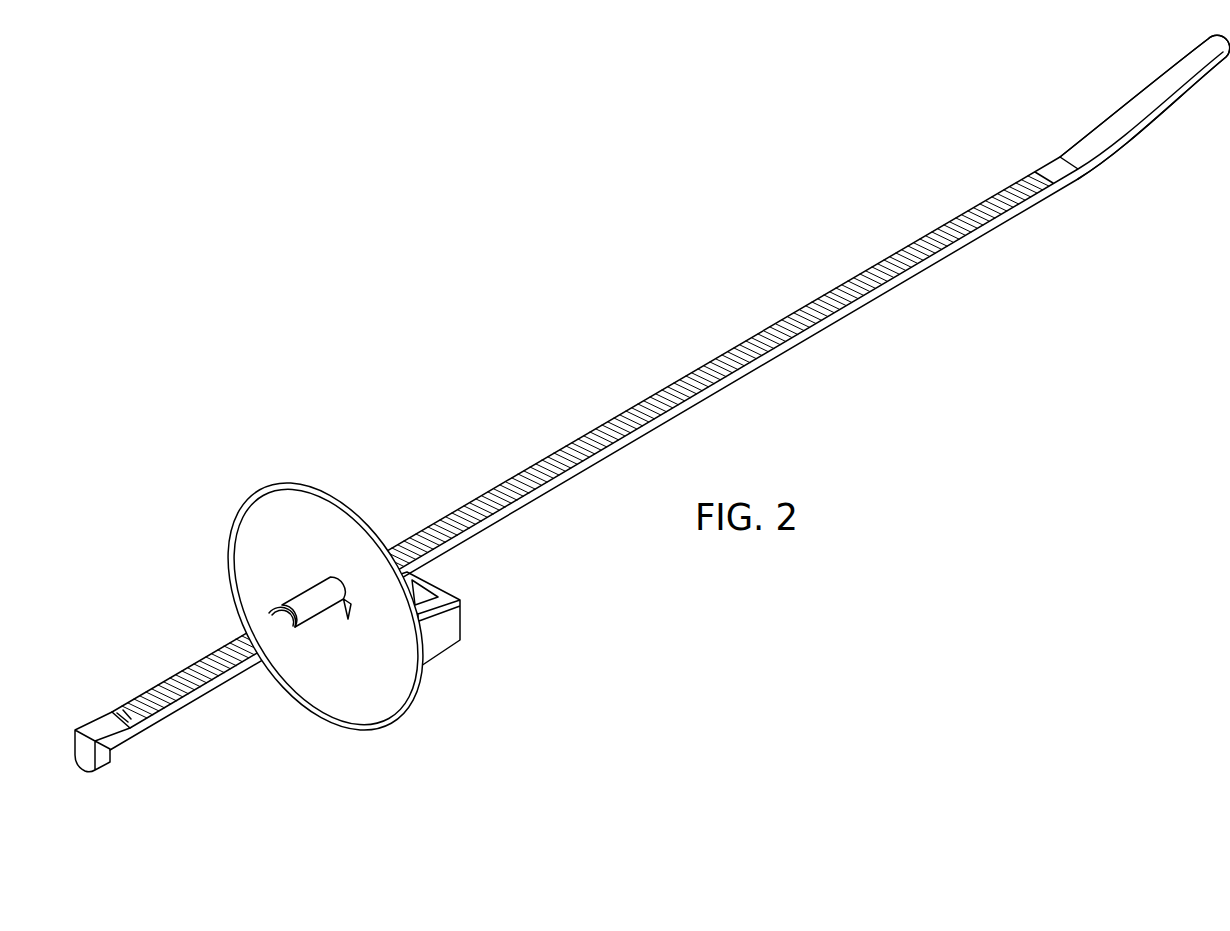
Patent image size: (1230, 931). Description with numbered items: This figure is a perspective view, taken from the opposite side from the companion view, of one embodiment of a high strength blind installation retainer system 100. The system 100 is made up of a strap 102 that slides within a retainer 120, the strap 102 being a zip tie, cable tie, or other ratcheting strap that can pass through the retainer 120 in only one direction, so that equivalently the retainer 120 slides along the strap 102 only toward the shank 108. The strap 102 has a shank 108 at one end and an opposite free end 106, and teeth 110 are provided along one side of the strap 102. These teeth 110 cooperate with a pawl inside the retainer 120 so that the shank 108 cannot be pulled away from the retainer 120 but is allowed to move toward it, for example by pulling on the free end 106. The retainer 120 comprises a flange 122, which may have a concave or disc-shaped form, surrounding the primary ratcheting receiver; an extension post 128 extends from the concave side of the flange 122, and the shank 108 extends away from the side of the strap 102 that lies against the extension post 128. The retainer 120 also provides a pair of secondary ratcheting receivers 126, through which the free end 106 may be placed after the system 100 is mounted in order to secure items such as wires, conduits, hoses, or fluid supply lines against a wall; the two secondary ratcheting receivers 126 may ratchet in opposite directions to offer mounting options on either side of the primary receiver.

The high strength blind installation retainer system 100 is at (461, 321).
The strap 102 is at (826, 339).
The free end 106 is at (1133, 108).
The shank 108 is at (96, 774).
The teeth 110 is at (625, 408).
The retainer 120 is at (332, 489).
The flange 122 is at (264, 491).
The secondary ratcheting receivers 126 is at (461, 618).
The extension post 128 is at (302, 598).